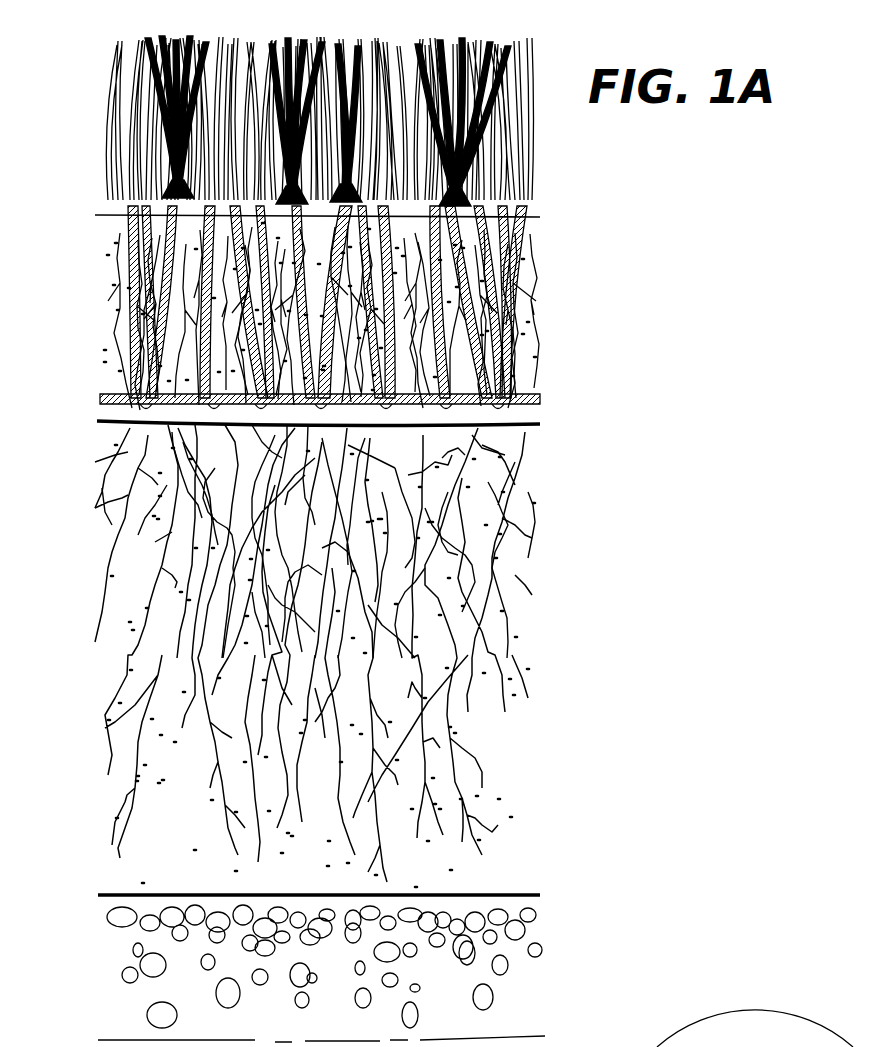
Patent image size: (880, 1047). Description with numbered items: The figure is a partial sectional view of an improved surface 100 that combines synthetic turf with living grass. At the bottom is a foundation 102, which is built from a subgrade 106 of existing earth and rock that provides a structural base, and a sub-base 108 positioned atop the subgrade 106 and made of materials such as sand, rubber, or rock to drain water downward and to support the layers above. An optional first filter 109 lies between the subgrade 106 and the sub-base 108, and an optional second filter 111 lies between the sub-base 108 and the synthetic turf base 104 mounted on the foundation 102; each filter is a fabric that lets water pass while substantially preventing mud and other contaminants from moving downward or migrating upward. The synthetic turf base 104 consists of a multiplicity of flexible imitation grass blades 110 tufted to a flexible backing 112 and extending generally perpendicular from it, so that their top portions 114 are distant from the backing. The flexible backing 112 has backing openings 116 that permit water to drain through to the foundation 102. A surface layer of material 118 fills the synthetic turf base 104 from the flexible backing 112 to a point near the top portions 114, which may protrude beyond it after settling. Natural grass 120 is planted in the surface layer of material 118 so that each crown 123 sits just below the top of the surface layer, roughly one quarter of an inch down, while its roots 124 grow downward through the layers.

The improved surface 100 is at (674, 224).
The foundation 102 is at (719, 750).
The synthetic turf base 104 is at (588, 343).
The subgrade 106 is at (580, 968).
The sub-base 108 is at (557, 598).
The first filter 109 is at (122, 895).
The imitation grass blades 110 is at (126, 268).
The second filter 111 is at (102, 426).
The flexible backing 112 is at (109, 379).
The top portions 114 is at (130, 193).
The backing openings 116 is at (128, 420).
The surface layer of material 118 is at (109, 316).
The natural grass 120 is at (178, 33).
The crown 123 is at (130, 214).
The roots 124 is at (262, 672).